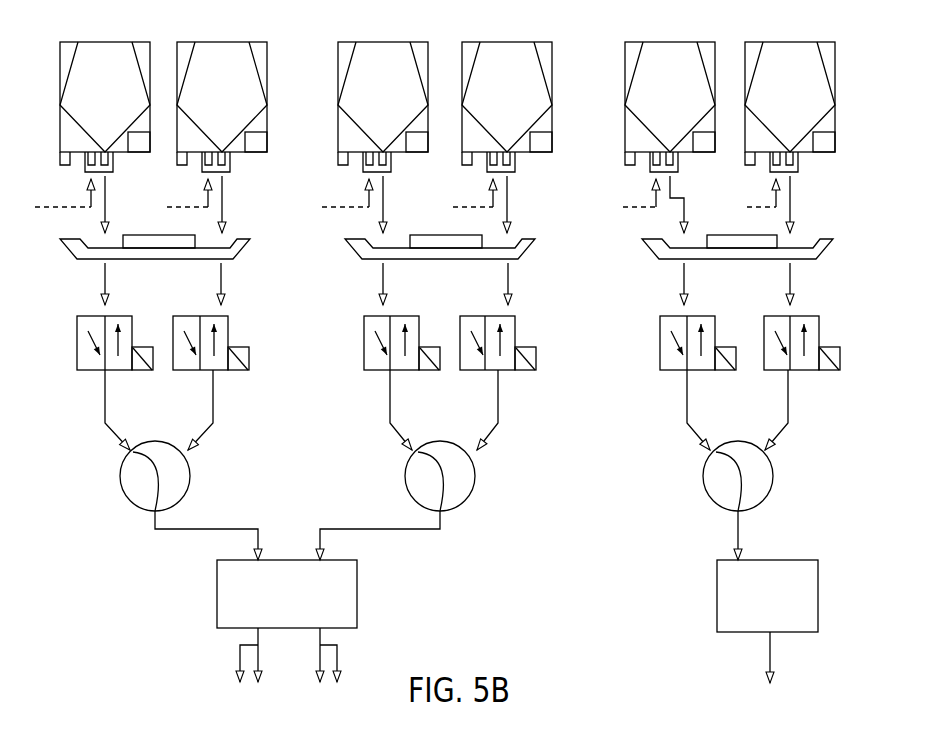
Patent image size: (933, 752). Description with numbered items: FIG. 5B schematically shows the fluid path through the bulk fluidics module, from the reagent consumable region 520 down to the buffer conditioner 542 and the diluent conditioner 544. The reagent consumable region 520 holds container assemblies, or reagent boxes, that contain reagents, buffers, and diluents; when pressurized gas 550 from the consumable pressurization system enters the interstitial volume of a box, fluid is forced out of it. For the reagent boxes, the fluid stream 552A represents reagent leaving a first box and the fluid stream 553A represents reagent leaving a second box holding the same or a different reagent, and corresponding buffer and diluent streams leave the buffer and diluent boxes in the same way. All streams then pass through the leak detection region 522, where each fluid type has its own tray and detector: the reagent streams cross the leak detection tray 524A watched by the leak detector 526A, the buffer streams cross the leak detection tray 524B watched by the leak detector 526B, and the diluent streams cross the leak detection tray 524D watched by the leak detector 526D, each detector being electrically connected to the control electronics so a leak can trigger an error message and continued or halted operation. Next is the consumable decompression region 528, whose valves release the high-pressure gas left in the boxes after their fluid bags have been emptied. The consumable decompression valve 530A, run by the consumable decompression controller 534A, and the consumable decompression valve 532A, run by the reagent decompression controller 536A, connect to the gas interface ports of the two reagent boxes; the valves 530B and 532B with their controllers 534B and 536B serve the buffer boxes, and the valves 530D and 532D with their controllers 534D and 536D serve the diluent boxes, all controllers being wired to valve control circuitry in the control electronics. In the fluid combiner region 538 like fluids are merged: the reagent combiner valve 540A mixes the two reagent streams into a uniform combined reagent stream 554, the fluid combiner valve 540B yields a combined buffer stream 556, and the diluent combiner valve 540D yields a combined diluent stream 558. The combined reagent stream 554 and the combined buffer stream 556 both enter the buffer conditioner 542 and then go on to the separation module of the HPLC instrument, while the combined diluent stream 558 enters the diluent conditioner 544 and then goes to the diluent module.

The reagent consumable region 520 is at (866, 40).
The leak detection region 522 is at (866, 205).
The leak detection tray 524A is at (131, 232).
The leak detection tray 524B is at (416, 233).
The leak detection tray 524D is at (710, 233).
The leak detector 526A is at (130, 236).
The leak detector 526B is at (416, 237).
The leak detector 526D is at (713, 237).
The consumable decompression region 528 is at (866, 320).
The consumable decompression valve 530A is at (91, 340).
The consumable decompression valve 530B is at (375, 341).
The consumable decompression valve 530D is at (671, 341).
The consumable decompression valve 532A is at (211, 340).
The consumable decompression valve 532B is at (495, 341).
The consumable decompression valve 532D is at (799, 341).
The consumable decompression controller 534A is at (135, 372).
The consumable decompression controller 534B is at (421, 372).
The consumable decompression controller 534D is at (717, 372).
The reagent decompression controller 536A is at (239, 372).
The consumable decompression controller 536B is at (524, 372).
The consumable decompression controller 536D is at (829, 372).
The fluid combiner region 538 is at (866, 437).
The reagent combiner valve 540A is at (121, 473).
The fluid combiner valve 540B is at (406, 474).
The diluent combiner valve 540D is at (704, 474).
The buffer conditioner 542 is at (357, 593).
The diluent conditioner 544 is at (723, 559).
The pressurized gas 550 is at (752, 202).
The fluid stream 552A is at (672, 192).
The fluid stream 553A is at (792, 192).
The combined reagent stream 554 is at (233, 527).
The combined buffer stream 556 is at (337, 527).
The combined diluent stream 558 is at (741, 531).